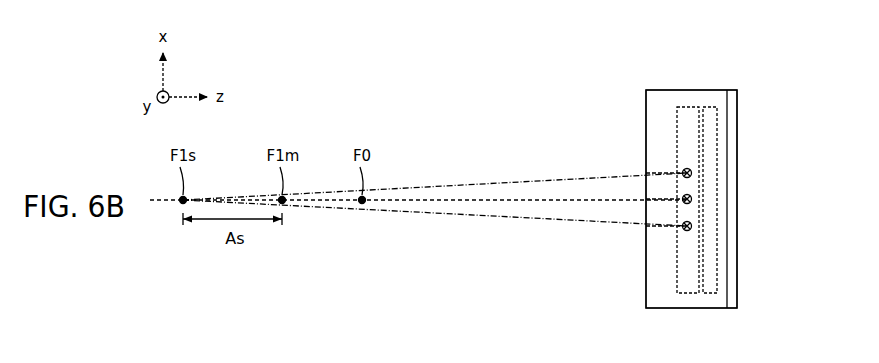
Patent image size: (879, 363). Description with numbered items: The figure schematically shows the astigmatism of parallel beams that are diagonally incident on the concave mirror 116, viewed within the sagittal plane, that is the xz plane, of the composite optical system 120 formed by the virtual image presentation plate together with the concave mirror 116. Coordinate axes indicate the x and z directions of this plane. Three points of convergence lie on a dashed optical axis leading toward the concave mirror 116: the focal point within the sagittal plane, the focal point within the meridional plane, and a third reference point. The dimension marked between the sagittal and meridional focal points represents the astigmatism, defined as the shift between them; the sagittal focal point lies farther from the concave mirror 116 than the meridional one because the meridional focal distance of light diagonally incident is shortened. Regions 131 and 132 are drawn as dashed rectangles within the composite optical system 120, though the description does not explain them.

The concave mirror 116 is at (690, 308).
The composite optical system 120 is at (760, 294).
The first light receiving region 131 is at (690, 107).
The second light receiving region 132 is at (709, 107).